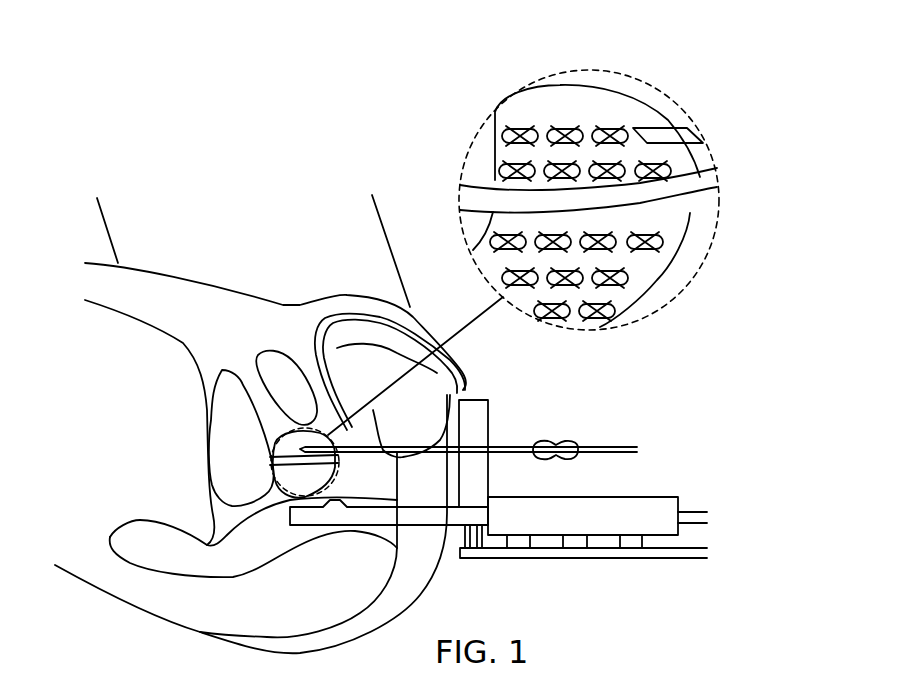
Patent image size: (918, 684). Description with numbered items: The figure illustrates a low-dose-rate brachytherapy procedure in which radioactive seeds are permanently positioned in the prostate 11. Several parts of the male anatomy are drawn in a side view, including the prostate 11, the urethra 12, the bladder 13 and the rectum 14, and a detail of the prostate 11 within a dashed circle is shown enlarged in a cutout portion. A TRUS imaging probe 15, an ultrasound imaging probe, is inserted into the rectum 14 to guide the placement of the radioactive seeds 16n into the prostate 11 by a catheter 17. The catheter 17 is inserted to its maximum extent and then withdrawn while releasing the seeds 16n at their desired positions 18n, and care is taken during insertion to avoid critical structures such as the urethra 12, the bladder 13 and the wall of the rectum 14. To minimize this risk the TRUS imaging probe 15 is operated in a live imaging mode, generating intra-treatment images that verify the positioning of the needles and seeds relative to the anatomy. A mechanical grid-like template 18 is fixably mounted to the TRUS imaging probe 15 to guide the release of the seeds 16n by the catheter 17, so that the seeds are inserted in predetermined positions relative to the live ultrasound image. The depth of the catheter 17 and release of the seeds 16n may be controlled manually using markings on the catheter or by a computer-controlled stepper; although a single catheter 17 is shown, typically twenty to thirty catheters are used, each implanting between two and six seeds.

The prostate 11 is at (273, 492).
The urethra 12 is at (323, 322).
The bladder 13 is at (233, 423).
The rectum 14 is at (127, 548).
The TRUS imaging probe 15 is at (673, 507).
The radioactive seeds 16n is at (620, 130).
The catheter 17 is at (637, 450).
The template 18 is at (477, 437).
The desired positions 18n is at (583, 130).